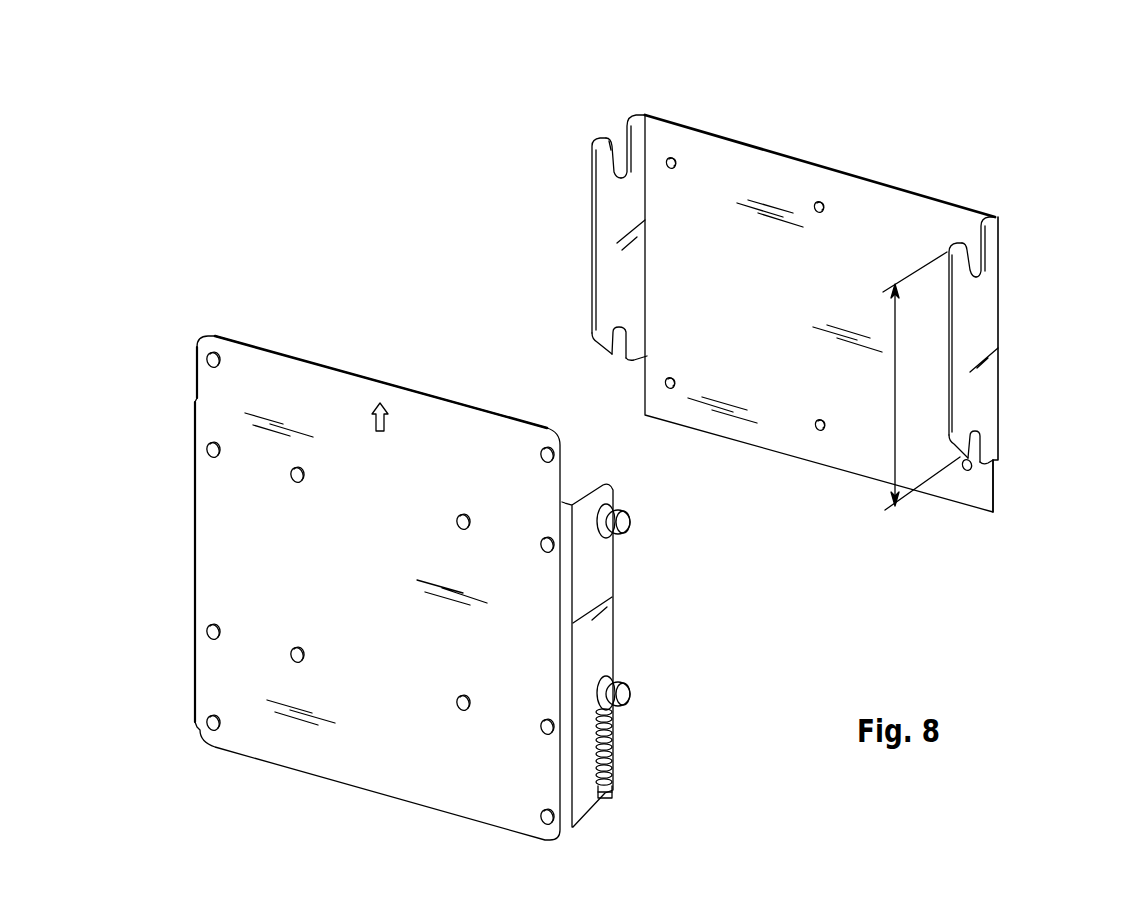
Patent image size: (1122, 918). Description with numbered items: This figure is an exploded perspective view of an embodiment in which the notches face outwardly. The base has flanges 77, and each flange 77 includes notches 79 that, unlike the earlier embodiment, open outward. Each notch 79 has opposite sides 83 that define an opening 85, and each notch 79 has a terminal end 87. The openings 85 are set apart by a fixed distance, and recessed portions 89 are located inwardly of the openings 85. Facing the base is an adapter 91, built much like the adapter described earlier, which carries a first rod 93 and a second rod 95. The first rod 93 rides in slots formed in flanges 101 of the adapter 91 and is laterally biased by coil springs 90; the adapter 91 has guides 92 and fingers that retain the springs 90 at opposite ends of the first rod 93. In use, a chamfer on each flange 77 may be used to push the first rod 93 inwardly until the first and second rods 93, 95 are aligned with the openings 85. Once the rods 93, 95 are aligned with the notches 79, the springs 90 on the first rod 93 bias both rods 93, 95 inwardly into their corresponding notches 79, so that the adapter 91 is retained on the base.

The adapter 91 is at (266, 308).
The flanges 101 is at (603, 647).
The second rod 95 is at (615, 494).
The first rod 93 is at (625, 692).
The coil springs 90 is at (613, 752).
The guides 92 is at (612, 793).
The flanges 77 is at (609, 197).
The opposite sides 83 is at (617, 163).
The openings 85 is at (615, 137).
The notches 79 is at (617, 142).
The recessed portions 89 is at (632, 157).
The terminal end 87 is at (632, 177).